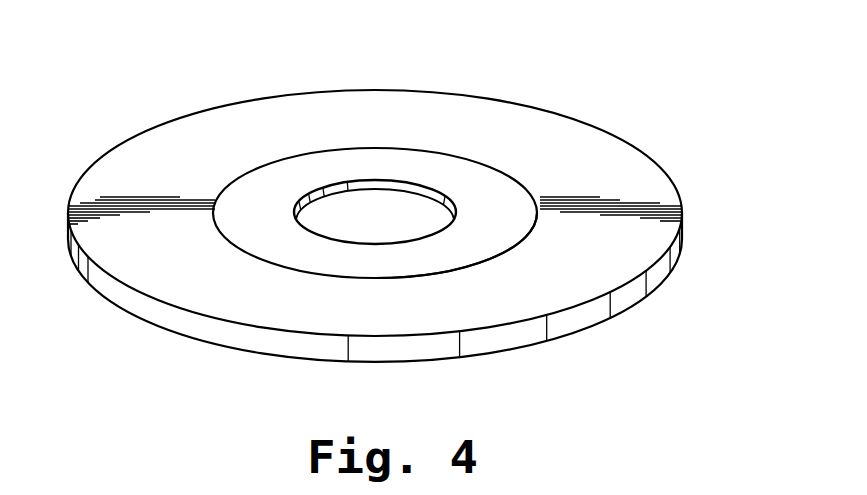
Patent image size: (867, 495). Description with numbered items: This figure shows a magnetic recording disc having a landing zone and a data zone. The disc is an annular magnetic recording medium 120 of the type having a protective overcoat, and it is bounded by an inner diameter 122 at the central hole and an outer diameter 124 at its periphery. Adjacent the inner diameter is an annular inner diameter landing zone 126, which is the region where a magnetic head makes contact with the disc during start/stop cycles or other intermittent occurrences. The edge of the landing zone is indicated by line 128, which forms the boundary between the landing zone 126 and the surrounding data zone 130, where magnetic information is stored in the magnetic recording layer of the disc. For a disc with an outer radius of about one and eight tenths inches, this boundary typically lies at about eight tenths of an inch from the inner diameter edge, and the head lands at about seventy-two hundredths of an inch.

The annular magnetic recording medium 120 is at (485, 83).
The inner diameter 122 is at (313, 205).
The outer diameter 124 is at (568, 117).
The inner diameter landing zone 126 is at (311, 254).
The line 128 is at (477, 267).
The data zone 130 is at (595, 168).